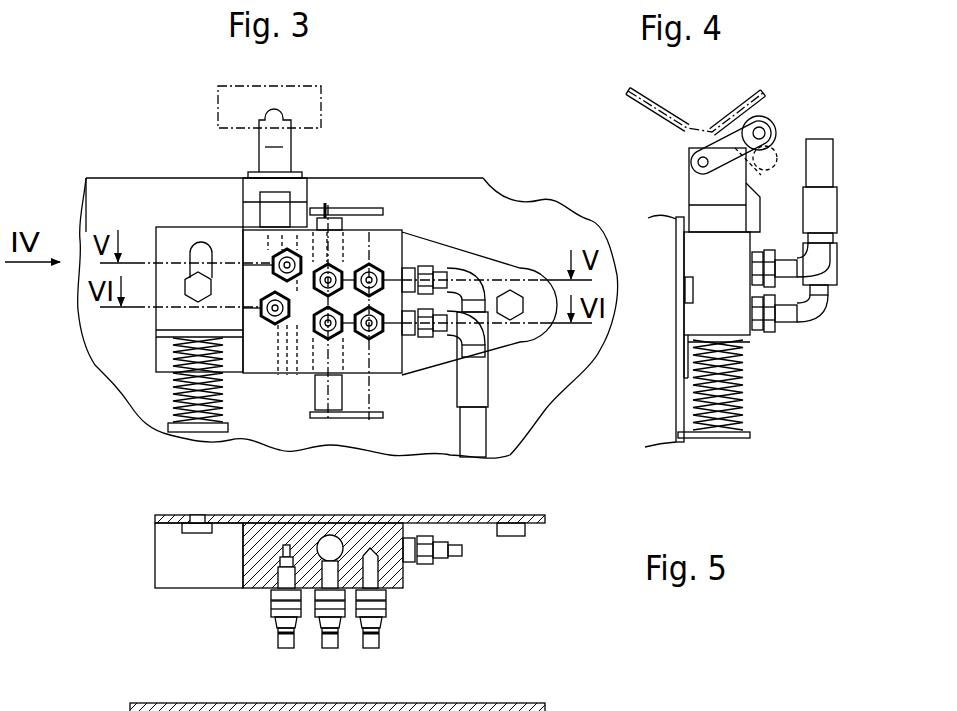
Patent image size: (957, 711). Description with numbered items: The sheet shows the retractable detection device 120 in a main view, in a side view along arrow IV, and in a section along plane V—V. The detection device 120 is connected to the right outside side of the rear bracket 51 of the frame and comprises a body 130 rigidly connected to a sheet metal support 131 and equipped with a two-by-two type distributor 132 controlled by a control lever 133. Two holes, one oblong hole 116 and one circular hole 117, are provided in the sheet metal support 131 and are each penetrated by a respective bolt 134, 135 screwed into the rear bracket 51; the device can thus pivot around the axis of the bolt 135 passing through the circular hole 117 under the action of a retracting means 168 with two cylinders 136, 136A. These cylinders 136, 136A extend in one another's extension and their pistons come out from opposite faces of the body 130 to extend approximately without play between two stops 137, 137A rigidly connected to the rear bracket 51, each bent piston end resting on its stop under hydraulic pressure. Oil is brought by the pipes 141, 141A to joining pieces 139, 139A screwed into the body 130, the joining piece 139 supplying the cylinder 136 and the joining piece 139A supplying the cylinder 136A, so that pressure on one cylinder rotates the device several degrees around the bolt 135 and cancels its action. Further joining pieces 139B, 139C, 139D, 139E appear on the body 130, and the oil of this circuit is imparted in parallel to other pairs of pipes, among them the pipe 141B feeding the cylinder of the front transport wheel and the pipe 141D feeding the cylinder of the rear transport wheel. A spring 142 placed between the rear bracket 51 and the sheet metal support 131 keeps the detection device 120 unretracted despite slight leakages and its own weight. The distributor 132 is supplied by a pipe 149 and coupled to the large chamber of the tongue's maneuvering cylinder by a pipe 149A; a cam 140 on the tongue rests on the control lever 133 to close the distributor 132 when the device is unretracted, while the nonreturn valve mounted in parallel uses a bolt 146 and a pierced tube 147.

In FIG. 3, the rear bracket 51 is at (116, 178).
In FIG. 4, the rear bracket 51 is at (679, 441).
In FIG. 5, the rear bracket 51 is at (139, 515).
In FIG. 3, the oblong hole 116 is at (200, 242).
In FIG. 5, the oblong hole 116 is at (184, 513).
In FIG. 5, the circular hole 117 is at (494, 518).
In FIG. 3, the detection device 120 is at (165, 200).
In FIG. 4, the detection device 120 is at (796, 348).
In FIG. 3, the body 130 is at (383, 268).
In FIG. 4, the body 130 is at (748, 370).
In FIG. 5, the body 130 is at (276, 515).
In FIG. 3, the sheet metal support 131 is at (162, 240).
In FIG. 4, the sheet metal support 131 is at (690, 257).
In FIG. 5, the sheet metal support 131 is at (153, 530).
In FIG. 3, the distributor 132 is at (243, 184).
In FIG. 4, the distributor 132 is at (689, 181).
In FIG. 3, the control lever 133 is at (259, 145).
In FIG. 4, the control lever 133 is at (700, 148).
In FIG. 3, the bolt 134 is at (196, 302).
In FIG. 4, the bolt 134 is at (693, 292).
In FIG. 5, the bolt 134 is at (198, 534).
In FIG. 3, the bolt 135 is at (525, 272).
In FIG. 5, the bolt 135 is at (512, 537).
In FIG. 3, the cylinder 136 is at (333, 216).
In FIG. 3, the cylinder 136A is at (342, 386).
In FIG. 3, the stop 137 is at (383, 211).
In FIG. 3, the stop 137A is at (370, 420).
In FIG. 3, the joining piece 139 is at (408, 278).
In FIG. 5, the joining piece 139 is at (410, 563).
In FIG. 3, the joining piece 139A is at (410, 376).
In FIG. 3, the connection fitting 139B is at (402, 262).
In FIG. 5, the connection fitting 139B is at (386, 598).
In FIG. 3, the connection fitting 139C is at (322, 312).
In FIG. 3, the connection fitting 139D is at (316, 212).
In FIG. 5, the connection fitting 139D is at (309, 620).
In FIG. 3, the connection fitting 139E is at (322, 338).
In FIG. 3, the cam 140 is at (321, 110).
In FIG. 4, the cam 140 is at (630, 105).
In FIG. 3, the pipe 141 is at (487, 335).
In FIG. 5, the pipe 141 is at (458, 557).
In FIG. 3, the pipe 141A is at (488, 397).
In FIG. 5, the pipe 141B is at (374, 648).
In FIG. 5, the pipe 141D is at (331, 650).
In FIG. 3, the spring 142 is at (173, 393).
In FIG. 4, the spring 142 is at (742, 410).
In FIG. 3, the bolt 146 is at (322, 340).
In FIG. 3, the tube 147 is at (278, 356).
In FIG. 4, the pipe 149 is at (816, 142).
In FIG. 5, the pipe 149 is at (283, 645).
In FIG. 4, the pipe 149A is at (826, 308).
In FIG. 3, the retracting means 168 is at (340, 178).